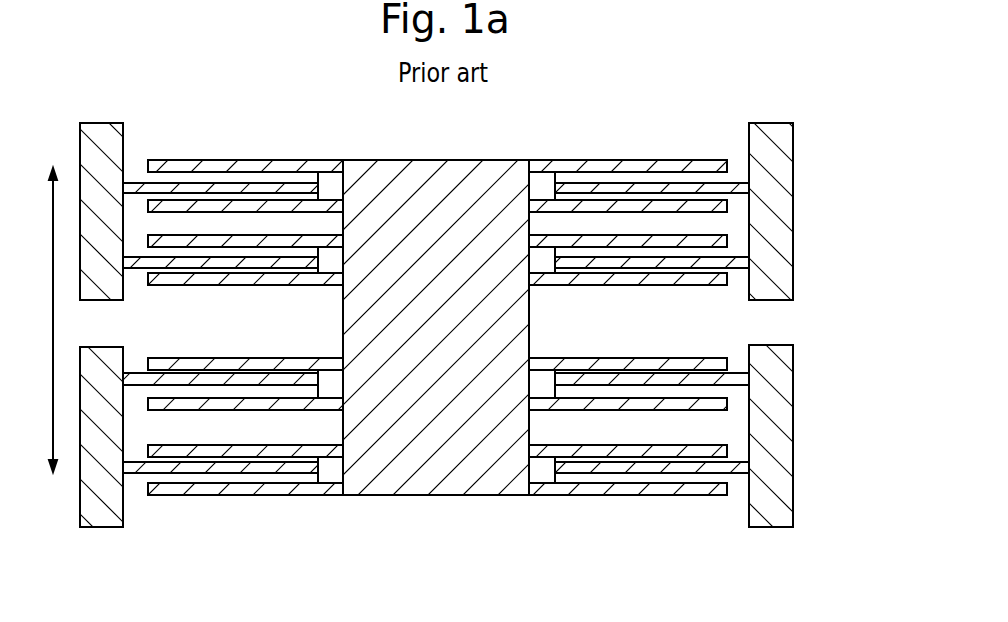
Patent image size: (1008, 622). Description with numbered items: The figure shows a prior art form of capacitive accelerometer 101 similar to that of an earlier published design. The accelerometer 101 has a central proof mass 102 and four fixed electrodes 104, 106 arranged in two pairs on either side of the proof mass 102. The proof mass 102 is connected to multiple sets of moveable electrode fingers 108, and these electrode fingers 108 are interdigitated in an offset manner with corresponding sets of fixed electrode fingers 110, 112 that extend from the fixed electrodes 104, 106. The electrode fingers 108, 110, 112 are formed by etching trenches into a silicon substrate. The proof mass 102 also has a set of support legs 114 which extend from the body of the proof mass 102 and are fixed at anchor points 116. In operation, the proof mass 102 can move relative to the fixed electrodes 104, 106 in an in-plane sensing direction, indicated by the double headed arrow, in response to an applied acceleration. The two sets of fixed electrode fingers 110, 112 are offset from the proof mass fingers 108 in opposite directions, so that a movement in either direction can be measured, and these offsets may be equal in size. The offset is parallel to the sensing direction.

The capacitive accelerometer 101 is at (780, 55).
The proof mass 102 is at (445, 452).
The fixed electrode 104 is at (93, 148).
The fixed electrode 106 is at (98, 503).
The moveable electrode fingers 108 is at (327, 190).
The fixed electrode fingers 110 is at (205, 188).
The fixed electrode fingers 112 is at (207, 475).
The support legs 114 is at (268, 165).
The anchor points 116 is at (145, 165).